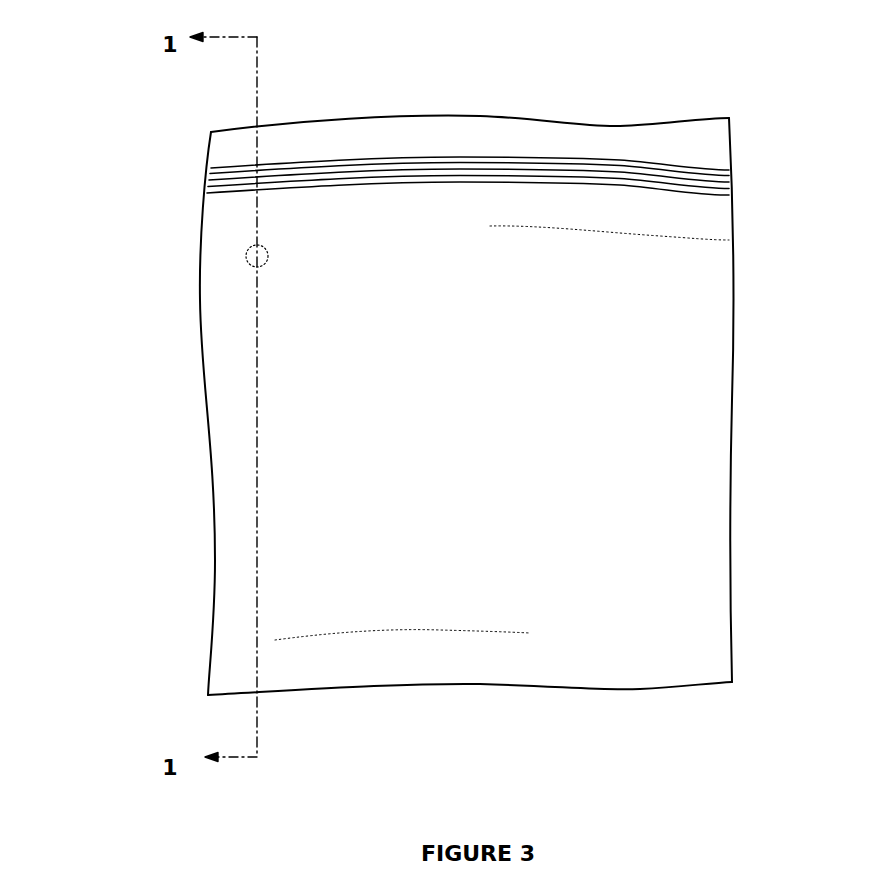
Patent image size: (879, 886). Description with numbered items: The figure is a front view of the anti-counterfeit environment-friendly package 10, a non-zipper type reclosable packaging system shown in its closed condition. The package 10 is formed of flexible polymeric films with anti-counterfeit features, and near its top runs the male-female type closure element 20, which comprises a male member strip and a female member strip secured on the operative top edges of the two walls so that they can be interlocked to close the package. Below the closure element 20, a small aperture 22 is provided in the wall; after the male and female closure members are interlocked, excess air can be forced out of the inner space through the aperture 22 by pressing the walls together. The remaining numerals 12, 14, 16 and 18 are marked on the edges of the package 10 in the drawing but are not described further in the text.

The anti-counterfeit environment-friendly package 10 is at (422, 400).
The top edge 12 is at (384, 106).
The bottom edge 14 is at (365, 708).
The right side edge 16 is at (745, 355).
The left side edge 18 is at (193, 378).
The male-female type closure element 20 is at (521, 150).
The aperture 22 is at (236, 255).